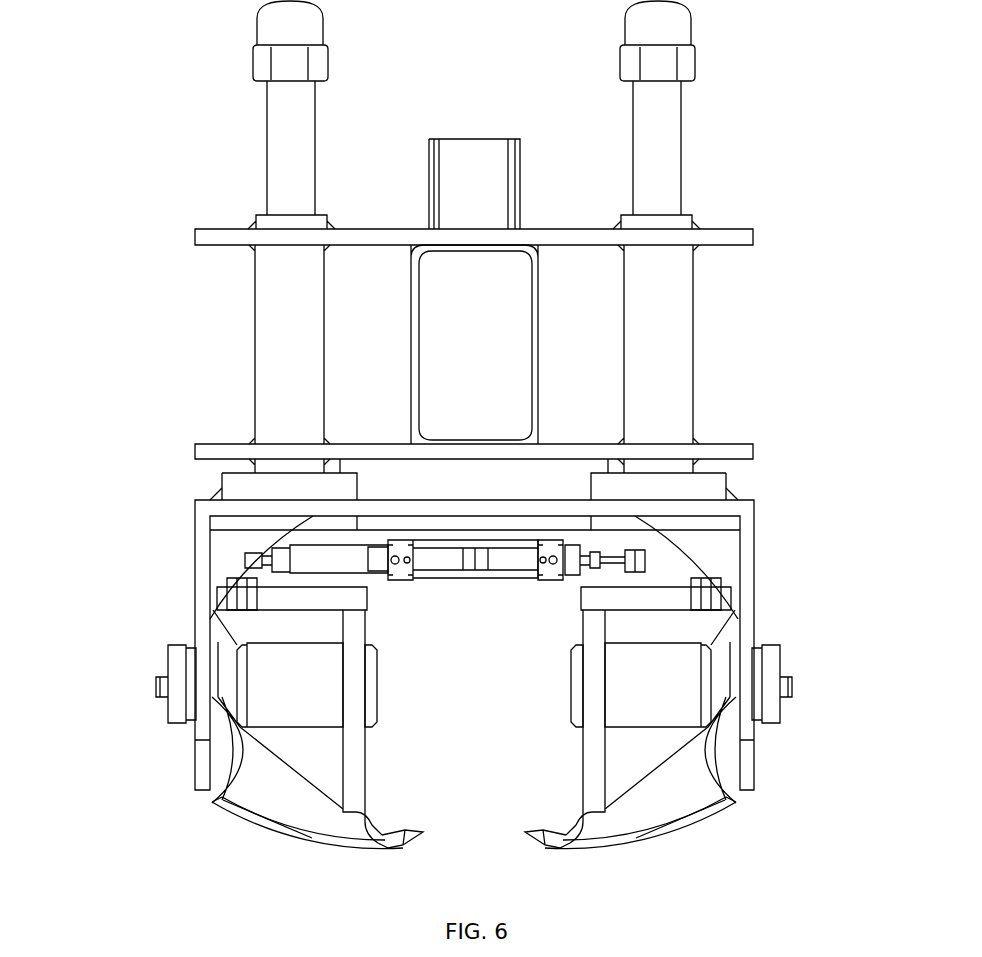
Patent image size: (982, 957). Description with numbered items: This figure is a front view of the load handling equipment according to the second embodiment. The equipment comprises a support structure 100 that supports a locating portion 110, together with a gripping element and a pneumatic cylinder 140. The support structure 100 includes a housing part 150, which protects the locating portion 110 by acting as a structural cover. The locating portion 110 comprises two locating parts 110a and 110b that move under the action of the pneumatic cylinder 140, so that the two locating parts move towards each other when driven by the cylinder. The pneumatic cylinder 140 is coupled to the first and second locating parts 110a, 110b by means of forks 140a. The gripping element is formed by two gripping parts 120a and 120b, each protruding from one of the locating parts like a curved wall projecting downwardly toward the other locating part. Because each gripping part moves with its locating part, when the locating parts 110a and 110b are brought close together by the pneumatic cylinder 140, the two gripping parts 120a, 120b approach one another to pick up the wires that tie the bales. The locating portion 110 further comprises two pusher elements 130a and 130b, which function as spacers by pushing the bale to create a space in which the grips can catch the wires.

The support structure 100 is at (522, 500).
The locating portion 110 is at (738, 647).
The first locating part 110a is at (353, 667).
The second locating part 110b is at (598, 663).
The first gripping part 120a is at (380, 833).
The second gripping part 120b is at (570, 830).
The first pusher element 130a is at (258, 837).
The second pusher element 130b is at (648, 845).
The pneumatic cylinder 140 is at (313, 553).
The forks 140a is at (243, 597).
The housing part 150 is at (283, 343).